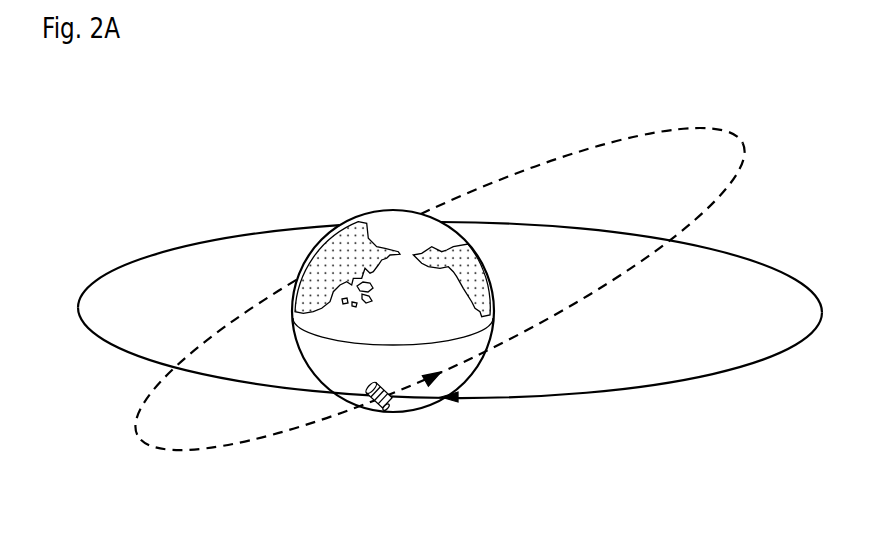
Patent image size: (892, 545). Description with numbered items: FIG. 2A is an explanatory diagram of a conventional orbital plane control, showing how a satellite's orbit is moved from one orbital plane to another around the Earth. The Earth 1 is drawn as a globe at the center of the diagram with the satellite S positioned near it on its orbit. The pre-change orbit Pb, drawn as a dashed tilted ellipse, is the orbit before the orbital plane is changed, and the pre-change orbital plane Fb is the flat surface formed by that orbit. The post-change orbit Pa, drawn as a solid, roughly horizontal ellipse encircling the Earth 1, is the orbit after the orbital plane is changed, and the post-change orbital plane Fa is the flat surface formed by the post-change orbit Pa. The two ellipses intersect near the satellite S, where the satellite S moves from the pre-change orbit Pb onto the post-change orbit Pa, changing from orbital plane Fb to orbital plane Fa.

The earth 1 is at (405, 319).
The satellite S is at (375, 407).
The post-change orbital plane Fa is at (697, 335).
The pre-change orbital plane Fb is at (640, 209).
The post-change orbit Pa is at (615, 388).
The pre-change orbit Pb is at (255, 440).